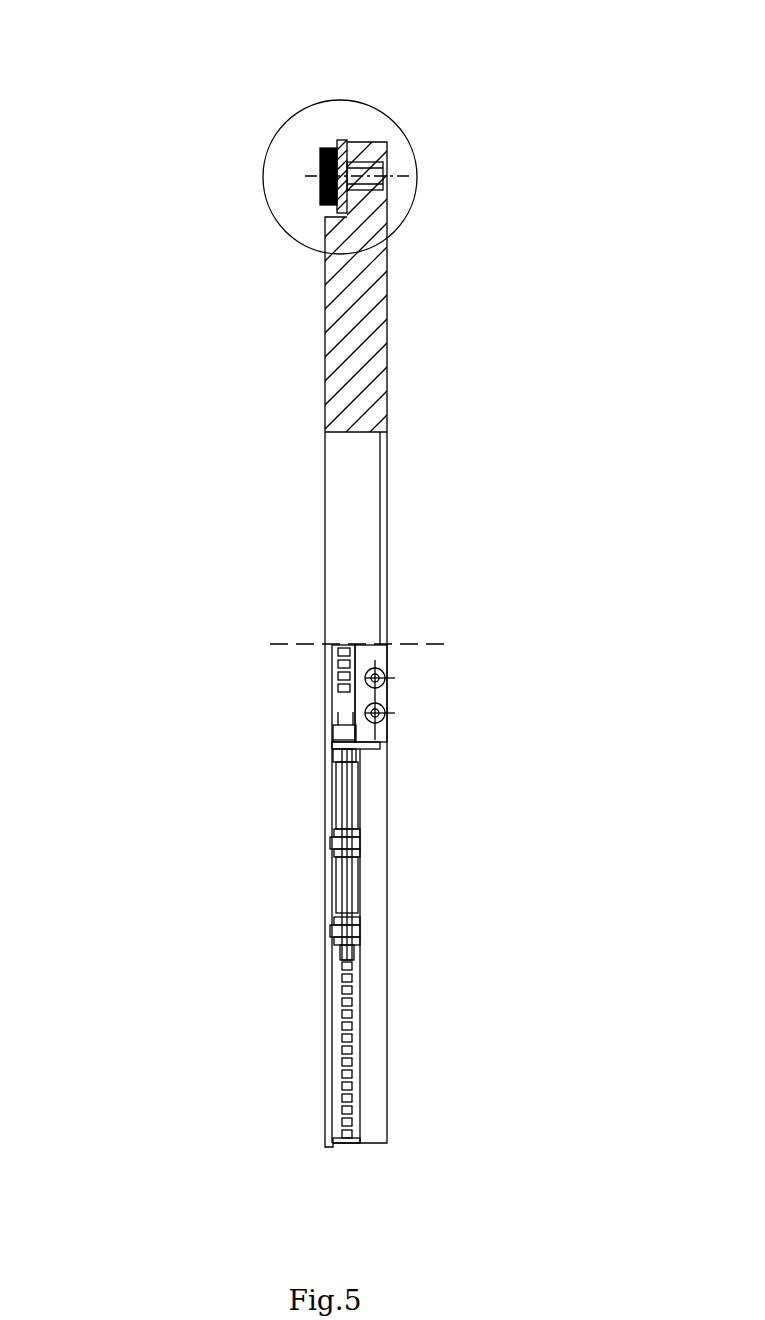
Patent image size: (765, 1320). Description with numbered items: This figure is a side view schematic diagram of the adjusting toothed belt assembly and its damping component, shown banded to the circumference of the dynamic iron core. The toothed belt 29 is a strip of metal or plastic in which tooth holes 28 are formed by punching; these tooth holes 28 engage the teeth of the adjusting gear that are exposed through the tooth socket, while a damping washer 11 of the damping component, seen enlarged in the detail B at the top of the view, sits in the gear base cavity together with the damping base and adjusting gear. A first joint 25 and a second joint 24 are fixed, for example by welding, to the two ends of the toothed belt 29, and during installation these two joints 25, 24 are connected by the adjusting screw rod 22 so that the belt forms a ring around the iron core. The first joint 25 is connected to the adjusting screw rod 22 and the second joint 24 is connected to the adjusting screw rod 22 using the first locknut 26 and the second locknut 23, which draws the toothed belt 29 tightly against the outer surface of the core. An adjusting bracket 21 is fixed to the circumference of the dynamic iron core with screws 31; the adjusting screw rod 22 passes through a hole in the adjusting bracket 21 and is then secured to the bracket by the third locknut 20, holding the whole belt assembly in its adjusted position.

The detail B is at (292, 160).
The damping washer 11 is at (317, 183).
The third locknut 20 is at (333, 755).
The adjusting bracket 21 is at (388, 748).
The adjusting screw rod 22 is at (360, 792).
The second locknut 23 is at (360, 833).
The second joint 24 is at (330, 837).
The first joint 25 is at (330, 922).
The first locknut 26 is at (360, 920).
The tooth hole 28 is at (333, 1140).
The toothed belt 29 is at (335, 1010).
The screw 31 is at (388, 707).